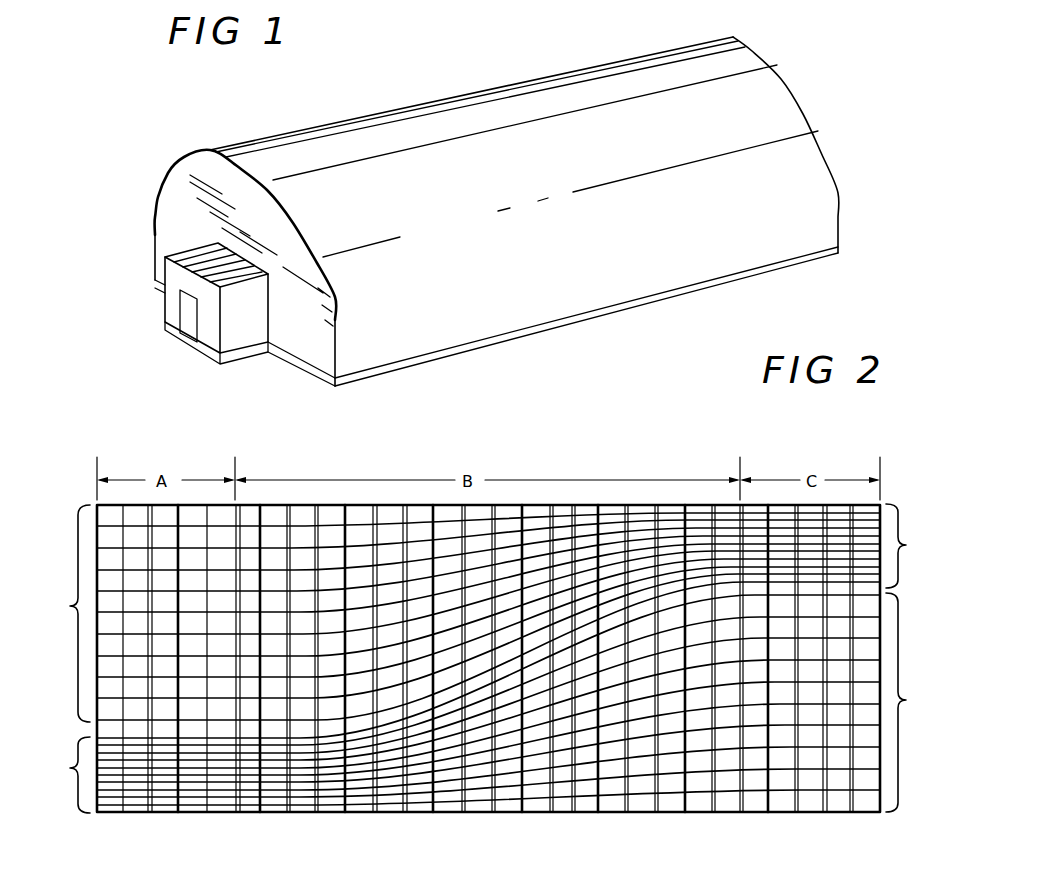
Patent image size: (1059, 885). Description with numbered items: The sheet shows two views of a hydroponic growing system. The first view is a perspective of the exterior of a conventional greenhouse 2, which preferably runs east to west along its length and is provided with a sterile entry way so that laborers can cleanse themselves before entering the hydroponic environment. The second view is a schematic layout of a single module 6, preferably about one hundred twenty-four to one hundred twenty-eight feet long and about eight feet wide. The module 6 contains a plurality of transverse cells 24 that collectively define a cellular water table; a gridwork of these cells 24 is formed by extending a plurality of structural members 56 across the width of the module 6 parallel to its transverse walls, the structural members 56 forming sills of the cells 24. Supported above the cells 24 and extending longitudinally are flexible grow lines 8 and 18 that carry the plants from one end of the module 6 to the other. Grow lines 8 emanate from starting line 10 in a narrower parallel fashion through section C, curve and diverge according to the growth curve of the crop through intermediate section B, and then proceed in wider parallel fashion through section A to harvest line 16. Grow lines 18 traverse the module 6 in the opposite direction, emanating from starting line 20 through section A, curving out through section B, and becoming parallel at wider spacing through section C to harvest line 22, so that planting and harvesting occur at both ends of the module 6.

In FIG. 1, the greenhouse 2 is at (462, 91).
In FIG. 2, the module 6 is at (482, 817).
In FIG. 2, the grow lines 8 is at (683, 531).
In FIG. 2, the starting line 10 is at (904, 545).
In FIG. 2, the harvest line 16 is at (72, 606).
In FIG. 2, the grow lines 18 is at (146, 800).
In FIG. 2, the starting line 20 is at (72, 768).
In FIG. 2, the harvest line 22 is at (904, 700).
In FIG. 2, the transverse cells 24 is at (305, 537).
In FIG. 2, the structural members 56 is at (343, 798).